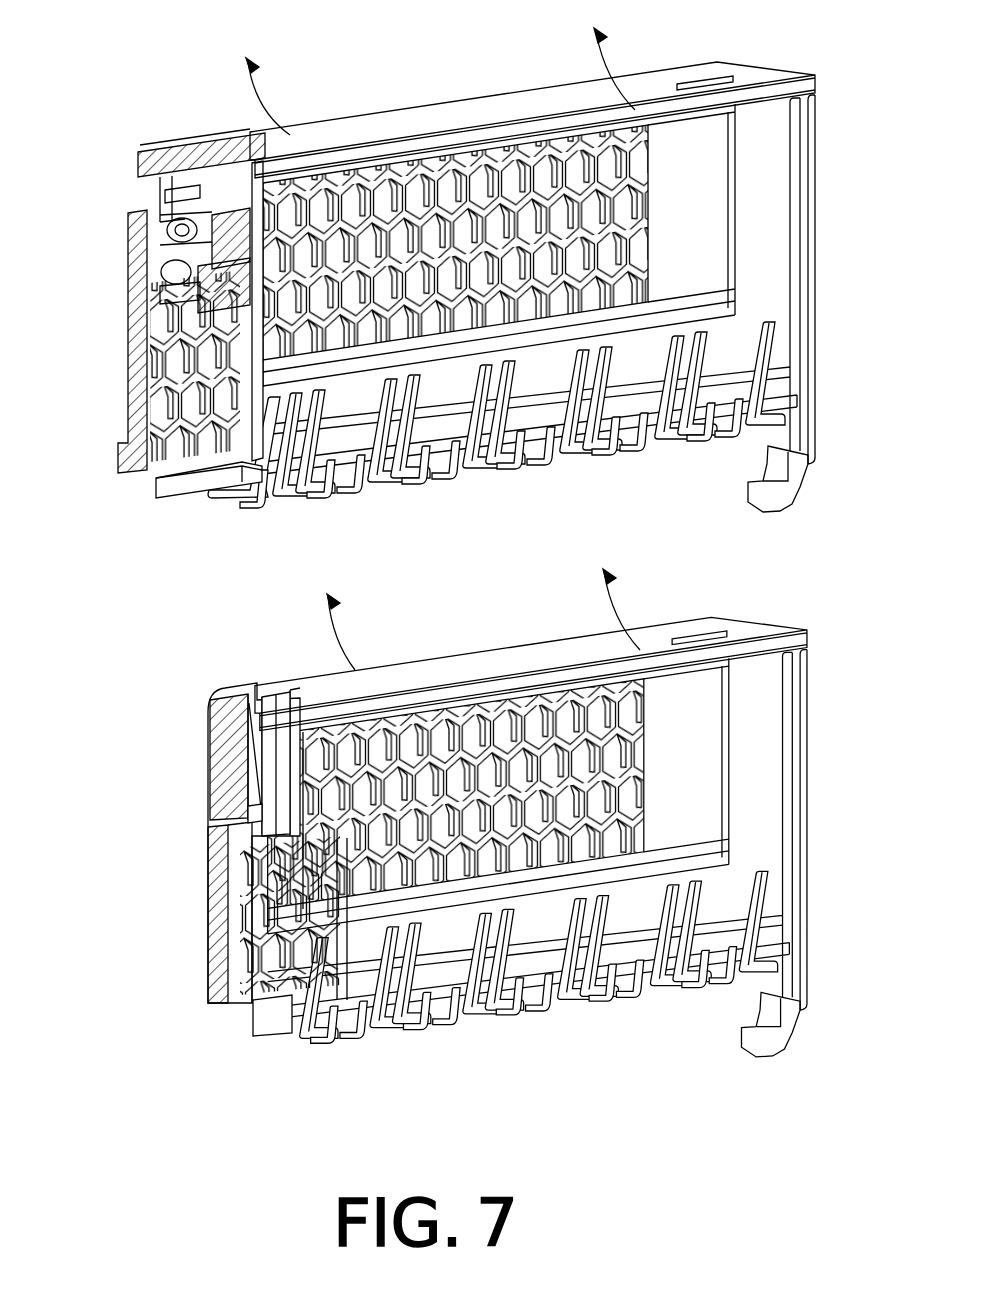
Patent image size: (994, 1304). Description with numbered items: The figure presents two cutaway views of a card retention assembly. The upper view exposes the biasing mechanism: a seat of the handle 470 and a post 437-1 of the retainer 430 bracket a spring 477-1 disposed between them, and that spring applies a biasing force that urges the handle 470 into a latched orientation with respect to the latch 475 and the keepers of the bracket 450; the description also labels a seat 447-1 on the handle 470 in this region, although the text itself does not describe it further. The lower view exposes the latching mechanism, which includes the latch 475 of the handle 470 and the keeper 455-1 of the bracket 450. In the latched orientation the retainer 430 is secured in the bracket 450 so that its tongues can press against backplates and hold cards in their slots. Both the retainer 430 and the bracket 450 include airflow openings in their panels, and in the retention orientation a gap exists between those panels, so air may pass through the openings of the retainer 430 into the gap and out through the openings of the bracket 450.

The retainer 430 is at (760, 125).
The handle 470 is at (460, 108).
The bracket 450 is at (145, 165).
The retention member 447-1 is at (168, 190).
The spring 477-1 is at (170, 224).
The post 437-1 is at (162, 268).
The keeper 455-1 is at (262, 815).
The latch 475 is at (248, 815).